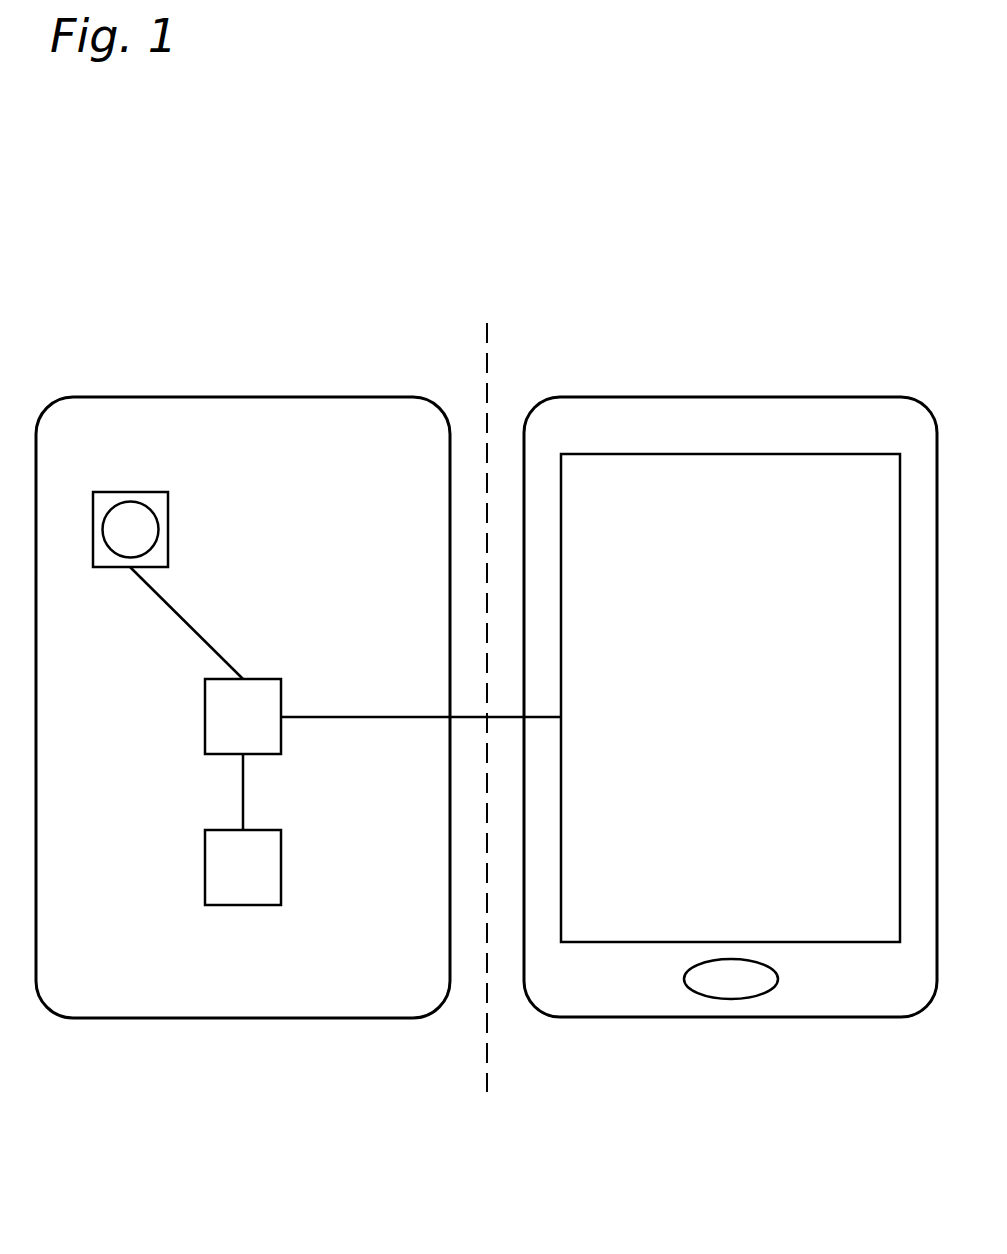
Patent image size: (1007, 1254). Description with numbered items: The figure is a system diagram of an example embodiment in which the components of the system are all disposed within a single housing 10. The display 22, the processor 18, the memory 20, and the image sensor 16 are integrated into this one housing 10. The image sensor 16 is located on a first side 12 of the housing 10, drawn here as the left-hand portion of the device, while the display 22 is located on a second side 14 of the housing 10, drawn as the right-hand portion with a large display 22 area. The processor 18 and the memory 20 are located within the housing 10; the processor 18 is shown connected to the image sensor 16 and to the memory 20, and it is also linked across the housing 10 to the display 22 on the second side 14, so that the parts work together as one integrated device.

The housing 10 is at (362, 397).
The first side 12 is at (226, 440).
The second side 14 is at (716, 440).
The image sensor 16 is at (116, 541).
The processor 18 is at (229, 727).
The memory 20 is at (229, 877).
The display 22 is at (716, 553).